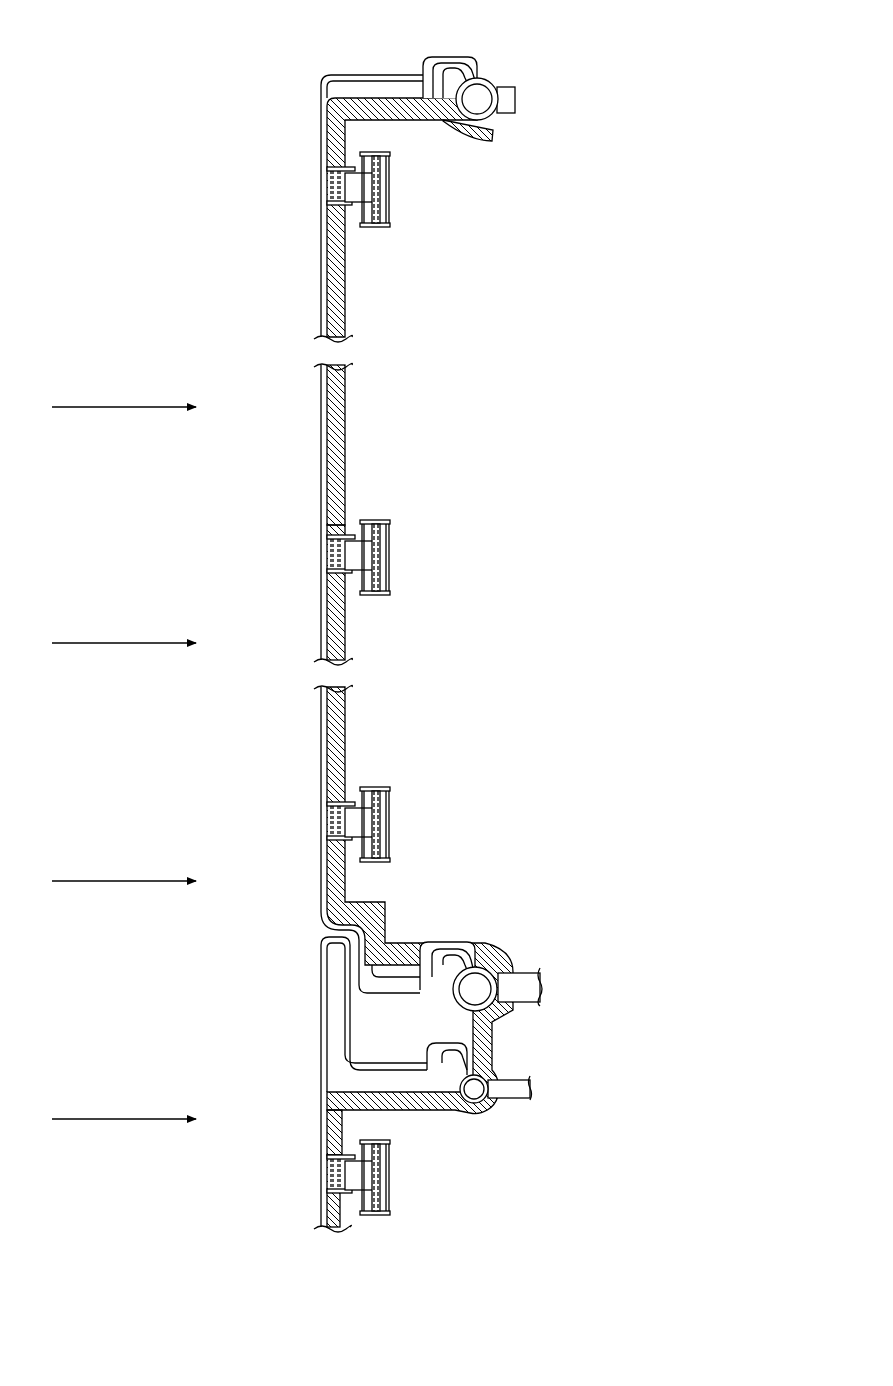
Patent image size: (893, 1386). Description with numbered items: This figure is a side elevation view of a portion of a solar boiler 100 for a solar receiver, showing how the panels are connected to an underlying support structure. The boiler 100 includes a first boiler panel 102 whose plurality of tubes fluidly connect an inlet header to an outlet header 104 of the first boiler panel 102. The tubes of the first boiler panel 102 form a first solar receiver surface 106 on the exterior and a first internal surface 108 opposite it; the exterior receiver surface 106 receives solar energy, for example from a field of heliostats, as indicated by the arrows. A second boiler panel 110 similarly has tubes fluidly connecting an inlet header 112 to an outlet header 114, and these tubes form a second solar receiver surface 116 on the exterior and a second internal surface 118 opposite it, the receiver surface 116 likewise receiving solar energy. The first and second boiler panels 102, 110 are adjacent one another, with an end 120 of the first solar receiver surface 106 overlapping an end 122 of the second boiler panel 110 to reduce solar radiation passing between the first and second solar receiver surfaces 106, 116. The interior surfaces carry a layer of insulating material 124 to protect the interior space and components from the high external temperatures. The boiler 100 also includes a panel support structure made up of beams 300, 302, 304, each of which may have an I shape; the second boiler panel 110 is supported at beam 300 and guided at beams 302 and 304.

The solar boiler 100 is at (262, 72).
The first boiler panel 102 is at (337, 1224).
The outlet header 104 is at (476, 1093).
The first solar receiver surface 106 is at (321, 1052).
The first internal surface 108 is at (322, 1137).
The second boiler panel 110 is at (348, 514).
The inlet header 112 is at (482, 978).
The outlet header 114 is at (484, 92).
The second solar receiver surface 116 is at (322, 405).
The second internal surface 118 is at (345, 402).
The end of first solar receiver surface 120 is at (321, 1000).
The end of second boiler panel 122 is at (372, 945).
The insulating material 124 is at (345, 632).
The beam 300 is at (383, 228).
The beam 302 is at (390, 598).
The beam 304 is at (385, 788).